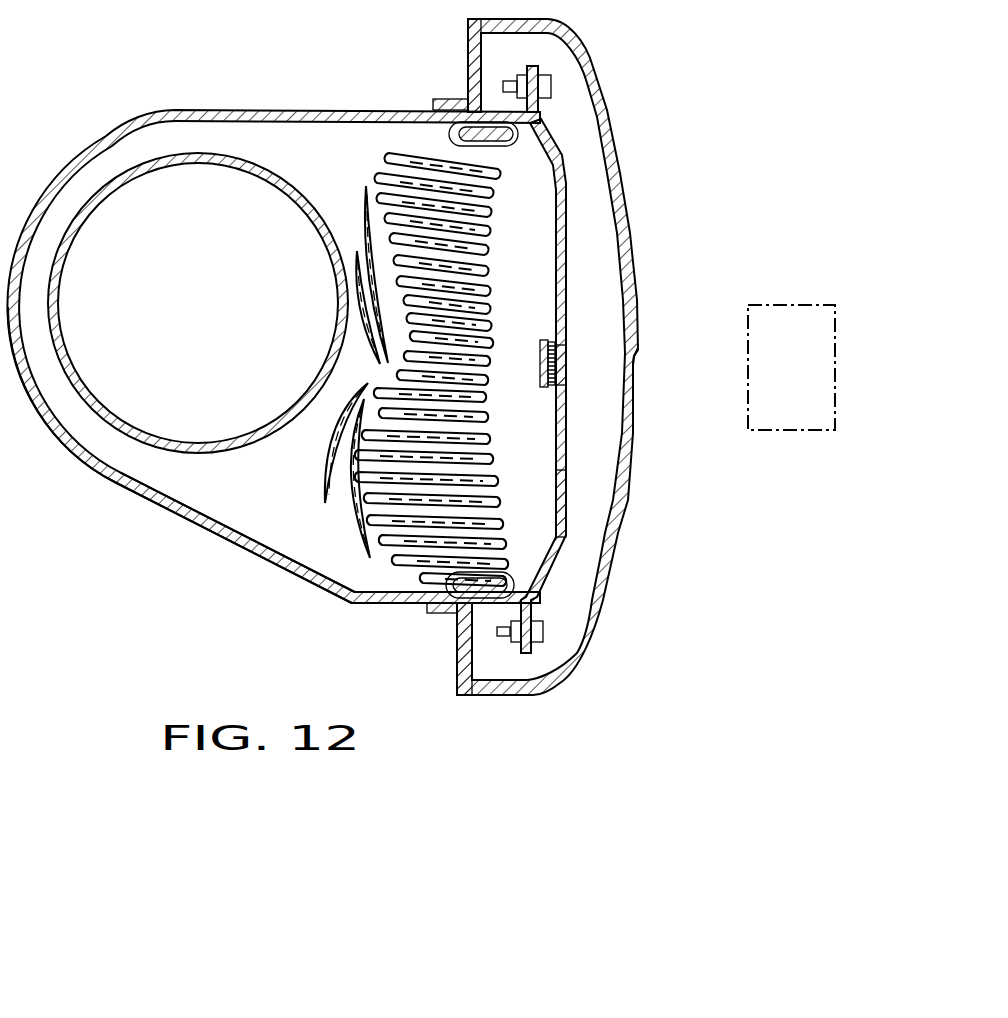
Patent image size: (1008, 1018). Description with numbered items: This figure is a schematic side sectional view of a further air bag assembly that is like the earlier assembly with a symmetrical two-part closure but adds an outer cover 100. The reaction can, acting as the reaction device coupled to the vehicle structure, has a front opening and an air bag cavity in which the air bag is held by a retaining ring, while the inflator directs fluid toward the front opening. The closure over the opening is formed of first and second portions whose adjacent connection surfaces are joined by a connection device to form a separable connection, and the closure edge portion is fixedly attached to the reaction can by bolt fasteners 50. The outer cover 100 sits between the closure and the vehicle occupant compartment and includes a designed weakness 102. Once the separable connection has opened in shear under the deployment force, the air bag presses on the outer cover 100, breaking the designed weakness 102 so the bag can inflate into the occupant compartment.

The fasteners 50 is at (535, 645).
The outer cover 100 is at (640, 178).
The designed weakness 102 is at (639, 360).